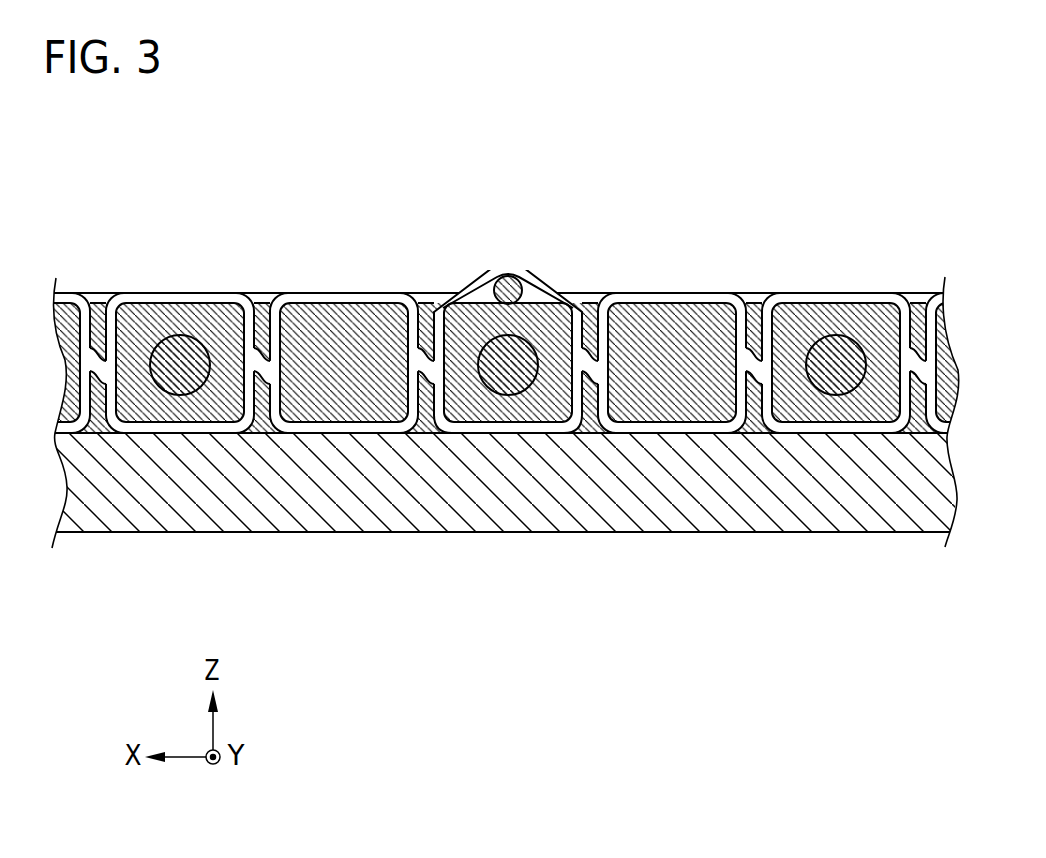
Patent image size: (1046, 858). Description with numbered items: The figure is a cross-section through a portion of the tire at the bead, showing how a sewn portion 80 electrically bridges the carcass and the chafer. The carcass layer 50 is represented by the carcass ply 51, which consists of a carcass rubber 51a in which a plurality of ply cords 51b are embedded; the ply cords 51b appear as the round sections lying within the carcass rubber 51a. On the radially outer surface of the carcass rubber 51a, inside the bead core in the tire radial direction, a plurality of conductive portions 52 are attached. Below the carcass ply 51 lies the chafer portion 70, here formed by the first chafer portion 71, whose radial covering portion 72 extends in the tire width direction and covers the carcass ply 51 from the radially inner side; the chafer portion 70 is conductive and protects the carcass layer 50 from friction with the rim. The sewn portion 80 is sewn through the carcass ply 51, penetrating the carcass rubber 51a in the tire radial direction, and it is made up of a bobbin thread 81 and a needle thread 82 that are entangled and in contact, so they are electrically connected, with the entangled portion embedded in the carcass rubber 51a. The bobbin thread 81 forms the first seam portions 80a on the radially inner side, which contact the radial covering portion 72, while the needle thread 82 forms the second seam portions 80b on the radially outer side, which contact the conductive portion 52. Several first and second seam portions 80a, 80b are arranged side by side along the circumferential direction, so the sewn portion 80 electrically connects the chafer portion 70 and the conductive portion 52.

The sewn portion 80 is at (523, 367).
The first seam portion 80a is at (192, 433).
The second seam portion 80b is at (147, 296).
The bobbin thread 81 is at (320, 412).
The needle thread 82 is at (191, 280).
The carcass layer 50 is at (508, 355).
The carcass ply 51 is at (593, 286).
The carcass rubber 51a is at (222, 422).
The ply cord 51b is at (178, 392).
The conductive portion 52 is at (508, 290).
The chafer portion 70 is at (502, 559).
The first chafer portion 71 is at (733, 545).
The radial covering portion 72 is at (430, 517).